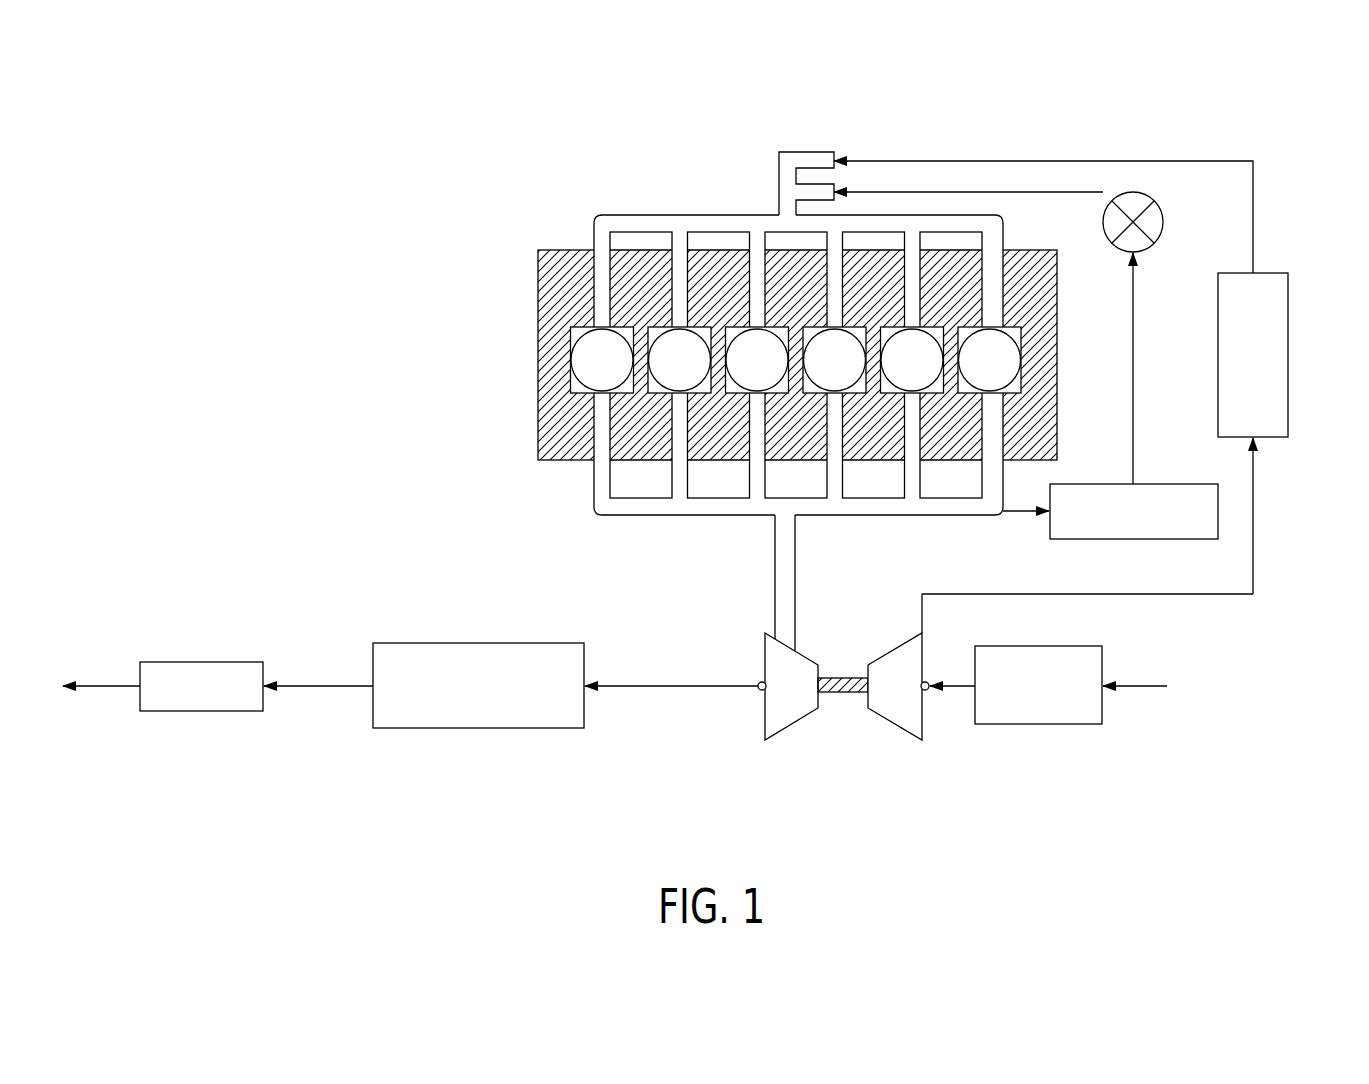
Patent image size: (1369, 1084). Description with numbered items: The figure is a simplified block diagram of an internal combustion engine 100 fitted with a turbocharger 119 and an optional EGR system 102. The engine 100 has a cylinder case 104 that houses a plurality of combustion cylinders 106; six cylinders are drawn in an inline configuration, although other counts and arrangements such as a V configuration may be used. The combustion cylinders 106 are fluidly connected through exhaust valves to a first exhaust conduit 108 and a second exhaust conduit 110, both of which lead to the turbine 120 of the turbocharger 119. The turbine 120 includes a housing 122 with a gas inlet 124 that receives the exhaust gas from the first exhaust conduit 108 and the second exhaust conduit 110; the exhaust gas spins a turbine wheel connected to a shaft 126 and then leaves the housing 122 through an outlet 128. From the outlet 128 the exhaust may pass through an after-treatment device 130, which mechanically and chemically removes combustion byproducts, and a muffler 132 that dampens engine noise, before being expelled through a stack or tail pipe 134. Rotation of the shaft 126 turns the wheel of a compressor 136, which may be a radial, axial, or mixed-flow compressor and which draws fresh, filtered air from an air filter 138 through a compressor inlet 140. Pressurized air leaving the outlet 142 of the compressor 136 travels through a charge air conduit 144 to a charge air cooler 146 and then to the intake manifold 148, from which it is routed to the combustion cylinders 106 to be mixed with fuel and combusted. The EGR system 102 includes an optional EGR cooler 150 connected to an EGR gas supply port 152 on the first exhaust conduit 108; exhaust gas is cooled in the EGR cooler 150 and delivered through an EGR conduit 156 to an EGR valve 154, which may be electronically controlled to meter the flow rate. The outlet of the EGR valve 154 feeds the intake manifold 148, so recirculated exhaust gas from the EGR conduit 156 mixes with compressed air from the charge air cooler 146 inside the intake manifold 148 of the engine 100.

The engine 100 is at (1190, 133).
The EGR system 102 is at (1123, 540).
The cylinder case 104 is at (550, 268).
The combustion cylinders 106 is at (595, 370).
The first exhaust conduit 108 is at (886, 517).
The second exhaust conduit 110 is at (658, 517).
The turbocharger 119 is at (843, 743).
The turbine 120 is at (791, 727).
The housing 122 is at (818, 665).
The gas inlet 124 is at (775, 638).
The shaft 126 is at (832, 693).
The outlet 128 is at (760, 691).
The after-treatment device 130 is at (478, 730).
The muffler 132 is at (200, 713).
The tail pipe 134 is at (108, 688).
The compressor 136 is at (892, 724).
The air filter 138 is at (1068, 726).
The compressor inlet 140 is at (927, 690).
The outlet 142 is at (922, 636).
The charge air conduit 144 is at (1255, 505).
The charge air cooler 146 is at (1280, 300).
The intake manifold 148 is at (810, 150).
The EGR cooler 150 is at (1068, 540).
The EGR gas supply port 152 is at (996, 517).
The EGR valve 154 is at (1155, 243).
The EGR conduit 156 is at (1135, 405).